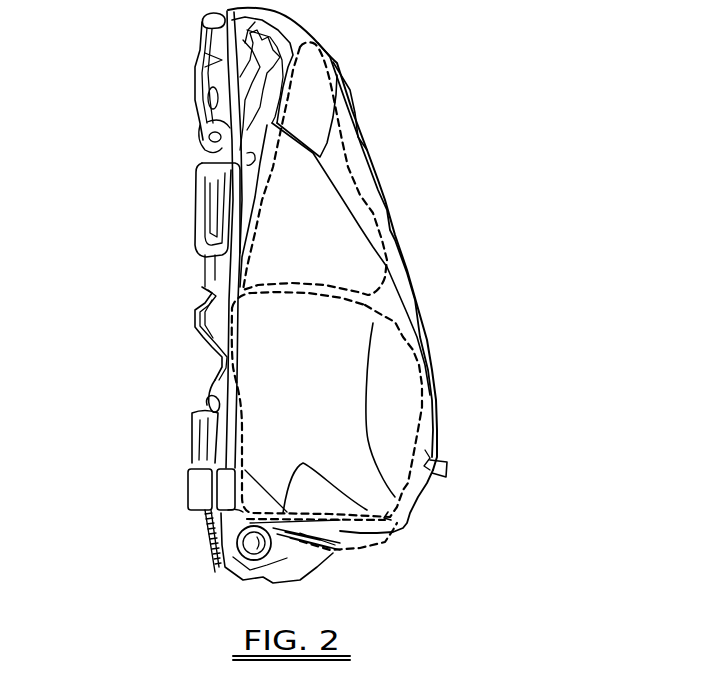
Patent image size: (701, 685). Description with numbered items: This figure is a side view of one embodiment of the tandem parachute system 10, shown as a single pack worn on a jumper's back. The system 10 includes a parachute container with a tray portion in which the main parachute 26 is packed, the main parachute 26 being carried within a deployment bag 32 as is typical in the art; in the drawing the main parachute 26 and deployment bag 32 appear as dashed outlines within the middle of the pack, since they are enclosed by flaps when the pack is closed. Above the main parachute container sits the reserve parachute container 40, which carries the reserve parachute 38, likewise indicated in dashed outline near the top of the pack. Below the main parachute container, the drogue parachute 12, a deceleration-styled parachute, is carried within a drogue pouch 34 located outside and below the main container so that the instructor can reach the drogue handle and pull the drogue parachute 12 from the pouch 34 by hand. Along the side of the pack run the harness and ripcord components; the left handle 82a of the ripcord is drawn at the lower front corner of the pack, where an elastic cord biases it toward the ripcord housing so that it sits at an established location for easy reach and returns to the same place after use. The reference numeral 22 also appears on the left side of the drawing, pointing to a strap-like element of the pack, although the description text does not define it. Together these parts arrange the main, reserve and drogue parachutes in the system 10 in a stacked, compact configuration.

The tandem parachute system 10 is at (408, 80).
The drogue parachute 12 is at (403, 528).
The harness strap 22 is at (200, 228).
The main parachute 26 is at (373, 403).
The deployment bag 32 is at (386, 314).
The drogue pouch 34 is at (373, 542).
The reserve parachute 38 is at (358, 187).
The reserve parachute container 40 is at (365, 152).
The left handle 82a is at (247, 543).